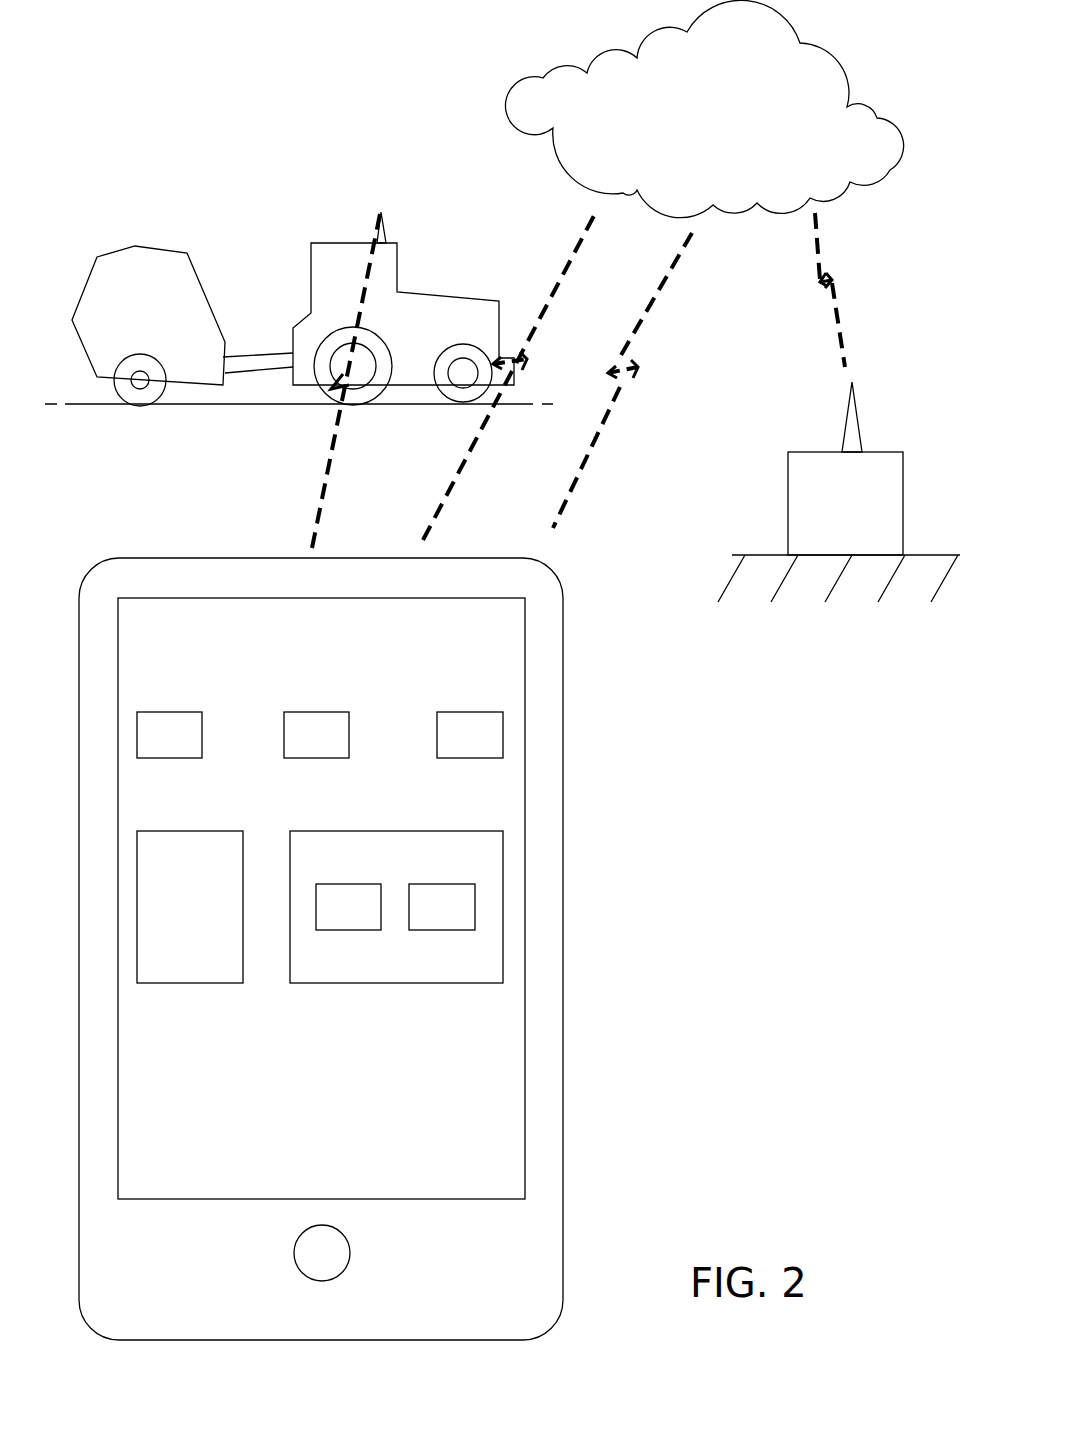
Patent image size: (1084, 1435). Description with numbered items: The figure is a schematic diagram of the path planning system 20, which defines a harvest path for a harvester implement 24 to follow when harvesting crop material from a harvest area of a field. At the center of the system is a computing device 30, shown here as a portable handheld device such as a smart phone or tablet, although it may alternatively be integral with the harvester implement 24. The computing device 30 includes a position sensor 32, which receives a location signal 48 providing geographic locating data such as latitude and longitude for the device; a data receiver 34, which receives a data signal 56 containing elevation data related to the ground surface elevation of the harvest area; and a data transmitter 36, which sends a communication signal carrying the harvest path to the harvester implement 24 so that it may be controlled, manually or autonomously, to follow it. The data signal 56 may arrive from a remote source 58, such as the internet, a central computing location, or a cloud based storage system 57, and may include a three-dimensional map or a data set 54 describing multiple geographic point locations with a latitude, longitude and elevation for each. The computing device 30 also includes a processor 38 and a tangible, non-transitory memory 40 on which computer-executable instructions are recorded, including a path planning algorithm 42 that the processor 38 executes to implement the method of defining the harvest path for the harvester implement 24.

The path planning system 20 is at (575, 661).
The harvester implement 24 is at (333, 243).
The computing device 30 is at (523, 960).
The position sensor 32 is at (186, 750).
The data receiver 34 is at (333, 750).
The data transmitter 36 is at (486, 750).
The processor 38 is at (206, 922).
The memory 40 is at (385, 831).
The path planning algorithm 42 is at (365, 922).
The location signal 48 is at (468, 474).
The data set 54 is at (458, 922).
The data signal 56 is at (598, 458).
The cloud based storage system 57 is at (730, 130).
The remote source 58 is at (885, 452).